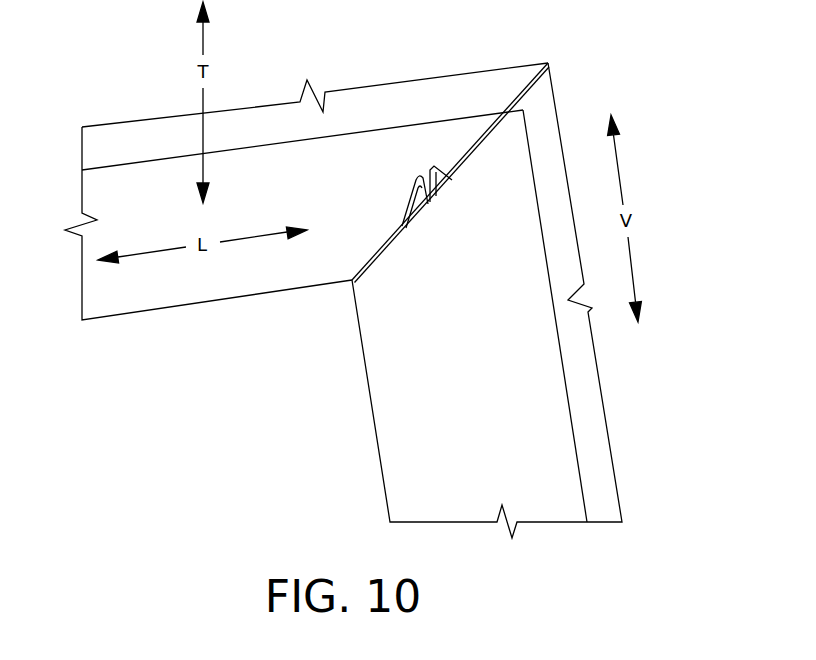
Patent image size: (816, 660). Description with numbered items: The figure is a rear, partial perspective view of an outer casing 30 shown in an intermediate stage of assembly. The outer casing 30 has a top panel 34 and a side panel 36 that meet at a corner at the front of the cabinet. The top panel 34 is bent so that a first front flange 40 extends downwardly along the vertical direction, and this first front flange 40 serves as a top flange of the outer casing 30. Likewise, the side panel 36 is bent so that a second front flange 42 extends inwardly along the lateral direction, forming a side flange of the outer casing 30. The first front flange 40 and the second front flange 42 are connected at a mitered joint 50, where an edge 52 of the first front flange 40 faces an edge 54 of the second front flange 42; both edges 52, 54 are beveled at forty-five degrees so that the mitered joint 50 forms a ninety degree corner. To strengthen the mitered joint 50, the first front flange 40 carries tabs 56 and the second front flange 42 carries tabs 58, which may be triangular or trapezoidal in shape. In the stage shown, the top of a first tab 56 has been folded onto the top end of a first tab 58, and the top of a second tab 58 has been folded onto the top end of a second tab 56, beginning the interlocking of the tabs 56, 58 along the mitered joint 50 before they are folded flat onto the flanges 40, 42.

The outer casing 30 is at (372, 272).
The top panel 34 is at (306, 190).
The side panel 36 is at (499, 300).
The first front flange 40 is at (123, 283).
The second front flange 42 is at (447, 408).
The mitered joint 50 is at (350, 284).
The edge of first front flange 52 is at (420, 219).
The edge of second front flange 54 is at (490, 152).
The tab 56 is at (430, 172).
The tab 58 is at (445, 183).